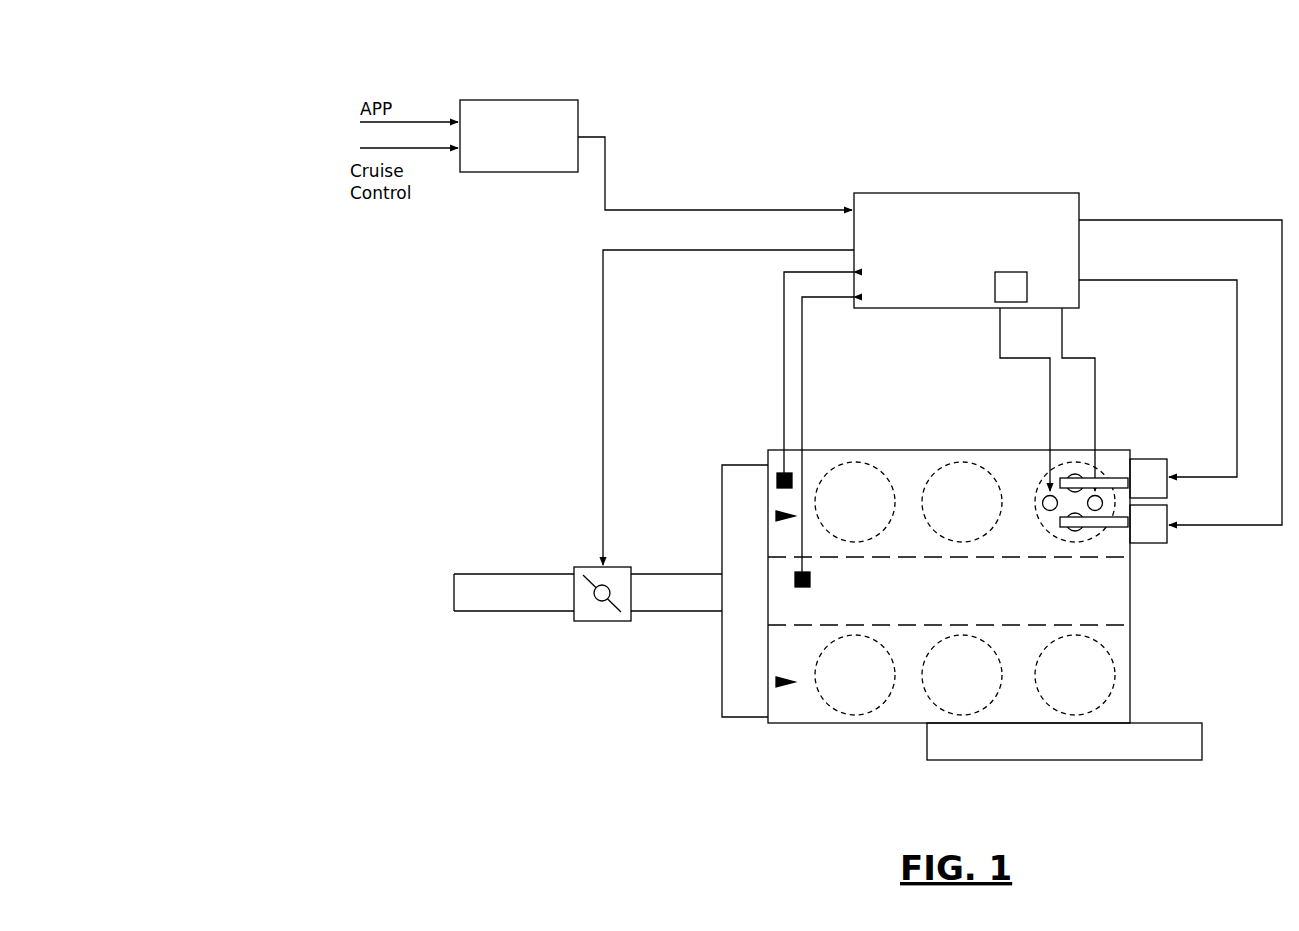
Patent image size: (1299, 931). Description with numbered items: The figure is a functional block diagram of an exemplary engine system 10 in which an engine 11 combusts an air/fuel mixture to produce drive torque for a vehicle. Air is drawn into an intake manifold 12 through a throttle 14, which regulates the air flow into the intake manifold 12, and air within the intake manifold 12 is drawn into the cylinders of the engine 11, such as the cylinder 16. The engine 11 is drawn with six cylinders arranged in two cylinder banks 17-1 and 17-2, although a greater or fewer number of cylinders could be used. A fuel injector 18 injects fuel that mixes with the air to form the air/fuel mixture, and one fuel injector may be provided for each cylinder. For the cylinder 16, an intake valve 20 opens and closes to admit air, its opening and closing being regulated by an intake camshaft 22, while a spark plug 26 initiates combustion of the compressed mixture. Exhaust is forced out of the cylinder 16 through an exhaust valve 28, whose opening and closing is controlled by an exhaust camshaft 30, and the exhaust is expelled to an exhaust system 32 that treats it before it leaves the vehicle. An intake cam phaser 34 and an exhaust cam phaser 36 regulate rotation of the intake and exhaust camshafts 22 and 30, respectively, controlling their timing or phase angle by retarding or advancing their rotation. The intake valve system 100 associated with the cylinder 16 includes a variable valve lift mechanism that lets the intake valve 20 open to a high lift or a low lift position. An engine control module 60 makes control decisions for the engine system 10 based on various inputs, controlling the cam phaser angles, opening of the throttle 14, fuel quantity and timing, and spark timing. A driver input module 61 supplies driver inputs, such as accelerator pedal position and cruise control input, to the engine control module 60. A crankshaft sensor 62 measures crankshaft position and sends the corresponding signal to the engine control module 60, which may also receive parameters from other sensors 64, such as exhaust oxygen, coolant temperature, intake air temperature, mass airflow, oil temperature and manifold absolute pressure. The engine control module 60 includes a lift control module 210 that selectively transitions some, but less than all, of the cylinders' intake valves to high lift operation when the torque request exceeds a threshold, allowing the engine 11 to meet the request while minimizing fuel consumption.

The engine system 10 is at (316, 70).
The driver input module 61 is at (518, 172).
The engine control module 60 is at (963, 193).
The lift control module 210 is at (995, 285).
The engine 11 is at (874, 450).
The intake manifold 12 is at (722, 480).
The throttle 14 is at (584, 567).
The cylinder 16 is at (1040, 520).
The cylinder bank 17-1 is at (768, 683).
The cylinder bank 17-2 is at (768, 517).
The fuel injector 18 is at (1044, 509).
The intake valve 20 is at (1102, 476).
The intake camshaft 22 is at (1122, 488).
The spark plug 26 is at (1100, 496).
The exhaust valve 28 is at (1075, 531).
The exhaust camshaft 30 is at (1105, 527).
The exhaust system 32 is at (1063, 760).
The intake cam phaser 34 is at (1148, 459).
The exhaust cam phaser 36 is at (1148, 543).
The crankshaft sensor 62 is at (809, 586).
The other sensors 64 is at (784, 473).
The intake valve system 100 is at (1044, 441).